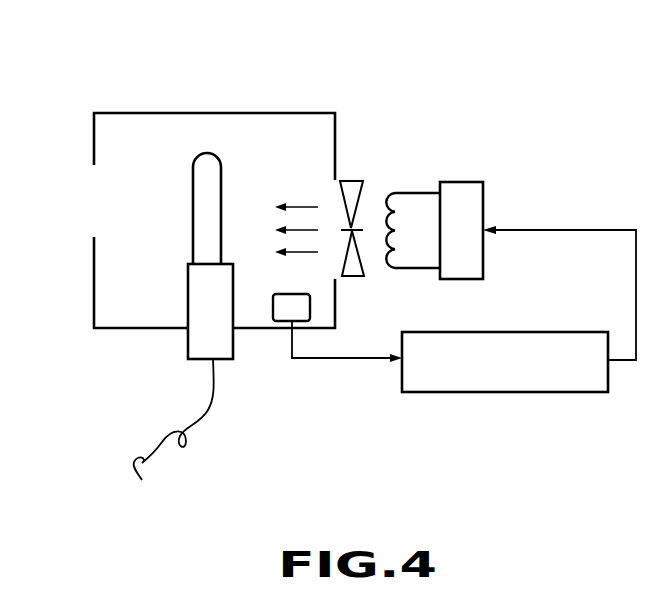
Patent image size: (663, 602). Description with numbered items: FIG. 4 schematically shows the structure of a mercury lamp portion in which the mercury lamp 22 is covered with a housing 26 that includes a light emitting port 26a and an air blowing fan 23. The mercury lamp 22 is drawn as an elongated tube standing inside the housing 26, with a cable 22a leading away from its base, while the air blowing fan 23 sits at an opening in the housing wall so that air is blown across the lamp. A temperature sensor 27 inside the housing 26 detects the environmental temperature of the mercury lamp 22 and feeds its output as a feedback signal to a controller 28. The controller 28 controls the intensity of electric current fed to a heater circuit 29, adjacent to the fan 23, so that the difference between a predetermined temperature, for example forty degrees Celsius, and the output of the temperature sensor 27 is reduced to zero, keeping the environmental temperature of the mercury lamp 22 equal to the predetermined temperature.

The mercury lamp 22 is at (205, 152).
The lamp power cable 22a is at (210, 410).
The air blowing fan 23 is at (357, 181).
The housing 26 is at (282, 112).
The light emitting port 26a is at (80, 182).
The temperature sensor 27 is at (280, 321).
The controller 28 is at (494, 392).
The heater circuit 29 is at (470, 182).